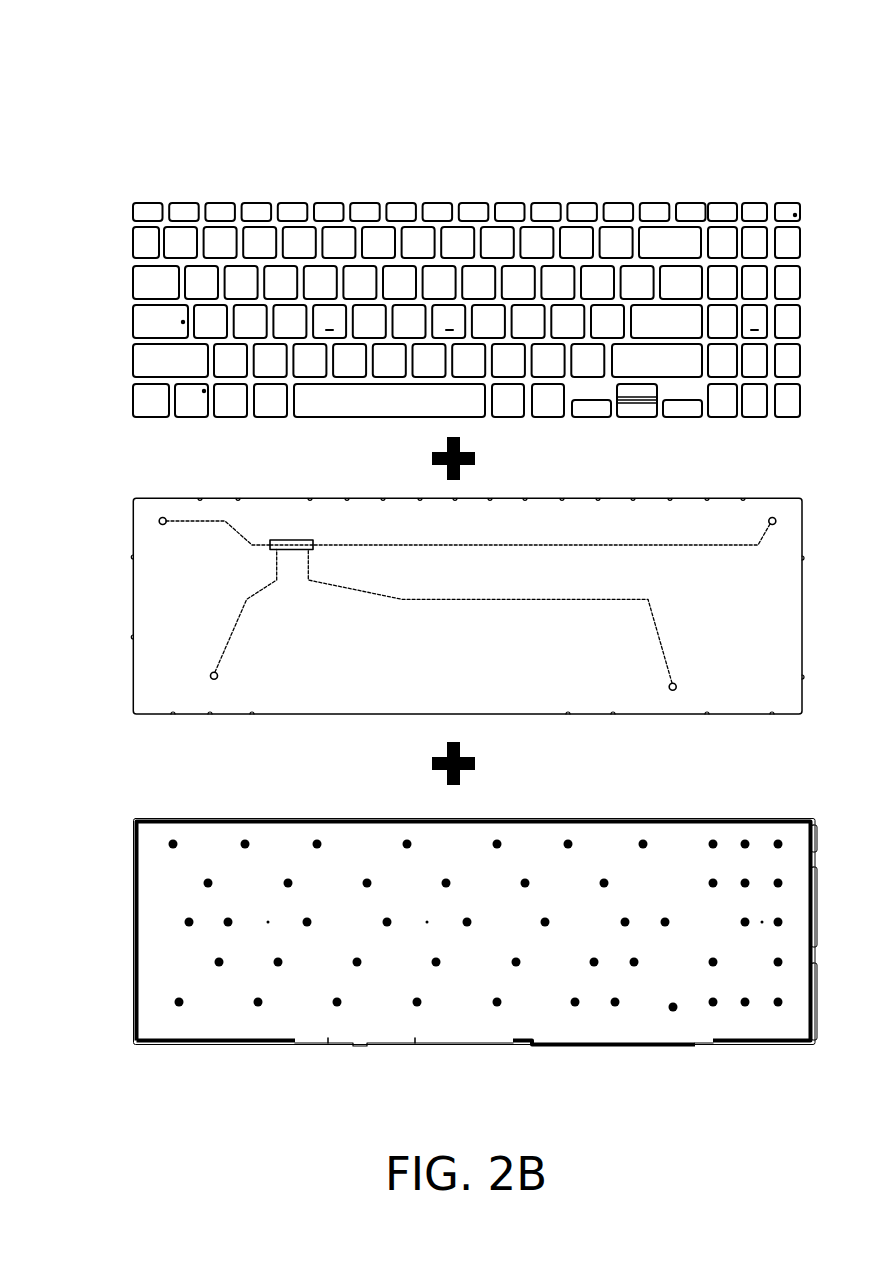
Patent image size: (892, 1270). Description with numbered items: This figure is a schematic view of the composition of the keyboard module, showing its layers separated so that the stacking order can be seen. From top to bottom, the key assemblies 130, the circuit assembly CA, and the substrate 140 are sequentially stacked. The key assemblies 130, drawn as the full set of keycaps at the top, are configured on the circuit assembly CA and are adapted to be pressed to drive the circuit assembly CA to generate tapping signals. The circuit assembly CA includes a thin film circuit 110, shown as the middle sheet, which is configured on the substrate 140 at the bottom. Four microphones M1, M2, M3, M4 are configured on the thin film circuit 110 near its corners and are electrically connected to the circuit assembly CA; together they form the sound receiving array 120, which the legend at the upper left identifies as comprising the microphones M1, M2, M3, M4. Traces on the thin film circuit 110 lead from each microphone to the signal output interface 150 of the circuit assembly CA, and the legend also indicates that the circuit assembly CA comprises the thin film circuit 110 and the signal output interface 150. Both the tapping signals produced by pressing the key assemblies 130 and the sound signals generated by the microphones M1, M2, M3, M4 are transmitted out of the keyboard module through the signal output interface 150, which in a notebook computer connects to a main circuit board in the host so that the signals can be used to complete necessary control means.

The key assemblies 130 is at (108, 265).
The thin film circuit 110 is at (157, 608).
The signal output interface 150 is at (295, 540).
The substrate 140 is at (138, 851).
The sound receiving array 120 is at (98, 13).
The microphone M1 is at (162, 517).
The microphone M2 is at (772, 517).
The microphone M3 is at (672, 691).
The microphone M4 is at (213, 680).
The circuit assembly CA is at (213, 37).